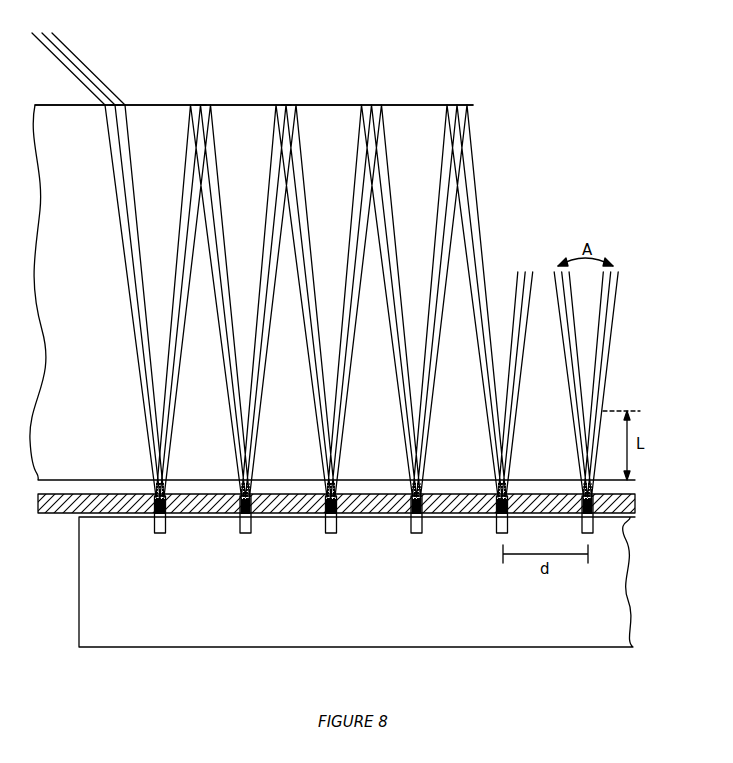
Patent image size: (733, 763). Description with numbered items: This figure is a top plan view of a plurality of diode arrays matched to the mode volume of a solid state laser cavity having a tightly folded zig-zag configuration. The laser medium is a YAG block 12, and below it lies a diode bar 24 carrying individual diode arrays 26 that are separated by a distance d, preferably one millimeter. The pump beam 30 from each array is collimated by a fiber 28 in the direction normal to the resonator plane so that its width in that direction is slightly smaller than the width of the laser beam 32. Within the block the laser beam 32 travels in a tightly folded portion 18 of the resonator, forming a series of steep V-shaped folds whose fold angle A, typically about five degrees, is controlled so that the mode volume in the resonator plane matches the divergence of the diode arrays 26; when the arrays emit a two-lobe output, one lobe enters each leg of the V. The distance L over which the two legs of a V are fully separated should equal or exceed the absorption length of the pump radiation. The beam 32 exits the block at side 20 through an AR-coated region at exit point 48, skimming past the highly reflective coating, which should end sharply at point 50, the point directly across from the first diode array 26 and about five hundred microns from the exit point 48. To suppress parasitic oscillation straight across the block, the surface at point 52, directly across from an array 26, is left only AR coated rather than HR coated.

The YAG block 12 is at (101, 437).
The tightly folded portion 18 is at (128, 320).
The side 20 is at (75, 103).
The diode bar 24 is at (508, 636).
The diode arrays 26 is at (158, 540).
The fiber 28 is at (640, 511).
The pump beam 30 is at (578, 487).
The laser beam 32 is at (112, 198).
The exit point 48 is at (118, 105).
The point 50 is at (163, 103).
The point 52 is at (235, 103).